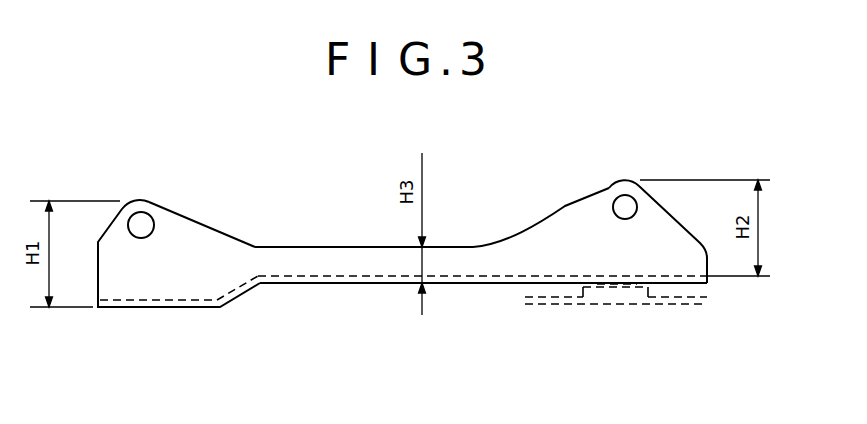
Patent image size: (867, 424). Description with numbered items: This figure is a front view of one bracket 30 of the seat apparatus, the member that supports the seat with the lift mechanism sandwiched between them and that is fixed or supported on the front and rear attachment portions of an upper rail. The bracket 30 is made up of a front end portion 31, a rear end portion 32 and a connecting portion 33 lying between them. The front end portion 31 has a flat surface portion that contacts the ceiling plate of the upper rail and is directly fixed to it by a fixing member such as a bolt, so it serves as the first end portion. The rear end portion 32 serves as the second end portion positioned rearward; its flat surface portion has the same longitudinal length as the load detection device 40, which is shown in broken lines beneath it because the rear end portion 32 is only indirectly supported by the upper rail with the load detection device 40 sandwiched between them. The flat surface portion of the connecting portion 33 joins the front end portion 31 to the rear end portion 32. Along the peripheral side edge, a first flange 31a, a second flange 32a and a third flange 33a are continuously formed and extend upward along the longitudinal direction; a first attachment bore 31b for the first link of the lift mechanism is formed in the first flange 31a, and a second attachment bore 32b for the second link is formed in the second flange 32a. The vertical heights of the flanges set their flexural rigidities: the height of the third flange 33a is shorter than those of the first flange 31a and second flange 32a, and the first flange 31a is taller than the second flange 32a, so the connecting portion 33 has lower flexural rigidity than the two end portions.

The bracket 30 is at (177, 83).
The front end portion 31 is at (262, 287).
The first flange 31a is at (203, 240).
The first attachment bore 31b is at (146, 215).
The rear end portion 32 is at (707, 287).
The second flange 32a is at (578, 223).
The second attachment bore 32b is at (619, 197).
The connecting portion 33 is at (524, 287).
The third flange 33a is at (368, 253).
The load detection device 40 is at (653, 315).